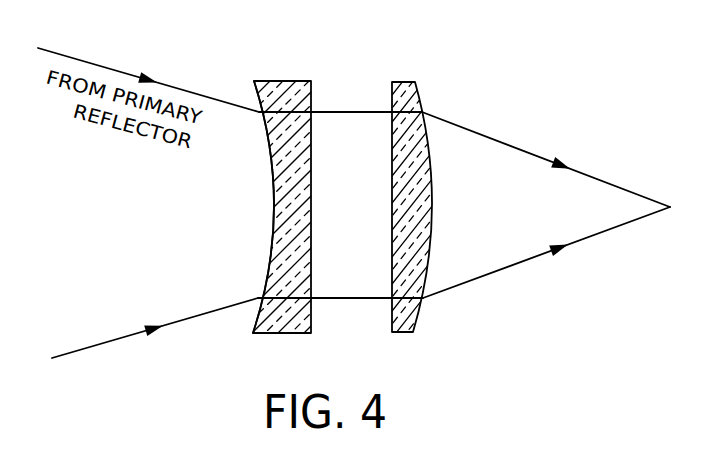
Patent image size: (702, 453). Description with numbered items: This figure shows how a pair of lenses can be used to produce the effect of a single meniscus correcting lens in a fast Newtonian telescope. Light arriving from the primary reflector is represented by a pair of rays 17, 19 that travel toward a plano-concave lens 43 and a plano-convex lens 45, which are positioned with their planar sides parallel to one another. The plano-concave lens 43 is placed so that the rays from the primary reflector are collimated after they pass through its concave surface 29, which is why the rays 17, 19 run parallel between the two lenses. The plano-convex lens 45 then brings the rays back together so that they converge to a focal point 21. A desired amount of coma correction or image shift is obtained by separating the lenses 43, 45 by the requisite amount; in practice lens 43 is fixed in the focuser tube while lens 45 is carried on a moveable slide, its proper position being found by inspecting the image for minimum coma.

The ray 17 is at (173, 82).
The ray 19 is at (102, 343).
The focal point 21 is at (670, 206).
The front surface 29 is at (273, 216).
The plano-concave lens 43 is at (282, 81).
The plano-convex lens 45 is at (407, 82).